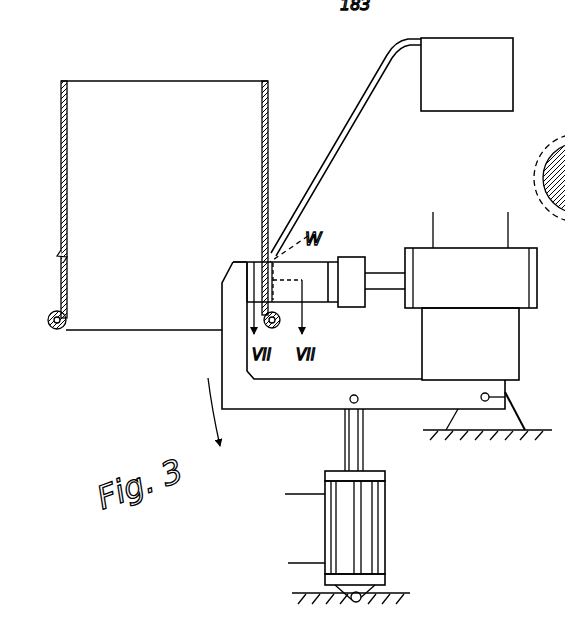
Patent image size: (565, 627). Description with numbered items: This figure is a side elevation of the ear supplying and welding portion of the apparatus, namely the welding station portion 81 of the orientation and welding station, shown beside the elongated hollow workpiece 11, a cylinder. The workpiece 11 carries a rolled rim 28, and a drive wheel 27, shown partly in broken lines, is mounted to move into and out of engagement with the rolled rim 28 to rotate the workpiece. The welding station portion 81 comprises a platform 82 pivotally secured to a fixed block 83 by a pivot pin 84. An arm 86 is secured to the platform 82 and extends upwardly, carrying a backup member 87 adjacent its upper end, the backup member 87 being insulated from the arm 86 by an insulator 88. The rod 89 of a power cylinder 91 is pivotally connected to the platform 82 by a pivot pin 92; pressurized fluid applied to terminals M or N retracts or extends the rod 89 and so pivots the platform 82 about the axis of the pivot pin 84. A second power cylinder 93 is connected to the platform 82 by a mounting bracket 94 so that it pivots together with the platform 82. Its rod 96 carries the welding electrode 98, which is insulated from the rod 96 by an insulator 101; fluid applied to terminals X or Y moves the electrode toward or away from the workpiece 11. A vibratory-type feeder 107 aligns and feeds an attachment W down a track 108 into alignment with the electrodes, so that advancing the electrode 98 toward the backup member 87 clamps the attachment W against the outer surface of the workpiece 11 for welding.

The workpiece 11 is at (155, 80).
The drive wheel 27 is at (546, 155).
The rolled rim 28 is at (60, 330).
The welding station portion 81 is at (461, 452).
The platform 82 is at (327, 392).
The fixed block 83 is at (508, 418).
The pivot pin 84 is at (507, 393).
The arm 86 is at (238, 287).
The backup member 87 is at (257, 272).
The insulator 88 is at (248, 262).
The rod 89 is at (355, 437).
The power cylinder 91 is at (370, 512).
The pivot pin 92 is at (357, 395).
The power cylinder 93 is at (462, 298).
The mounting bracket 94 is at (508, 352).
The rod 96 is at (390, 283).
The welding electrode 98 is at (318, 292).
The insulator 101 is at (341, 260).
The vibratory-type feeder 107 is at (505, 58).
The track 108 is at (352, 113).